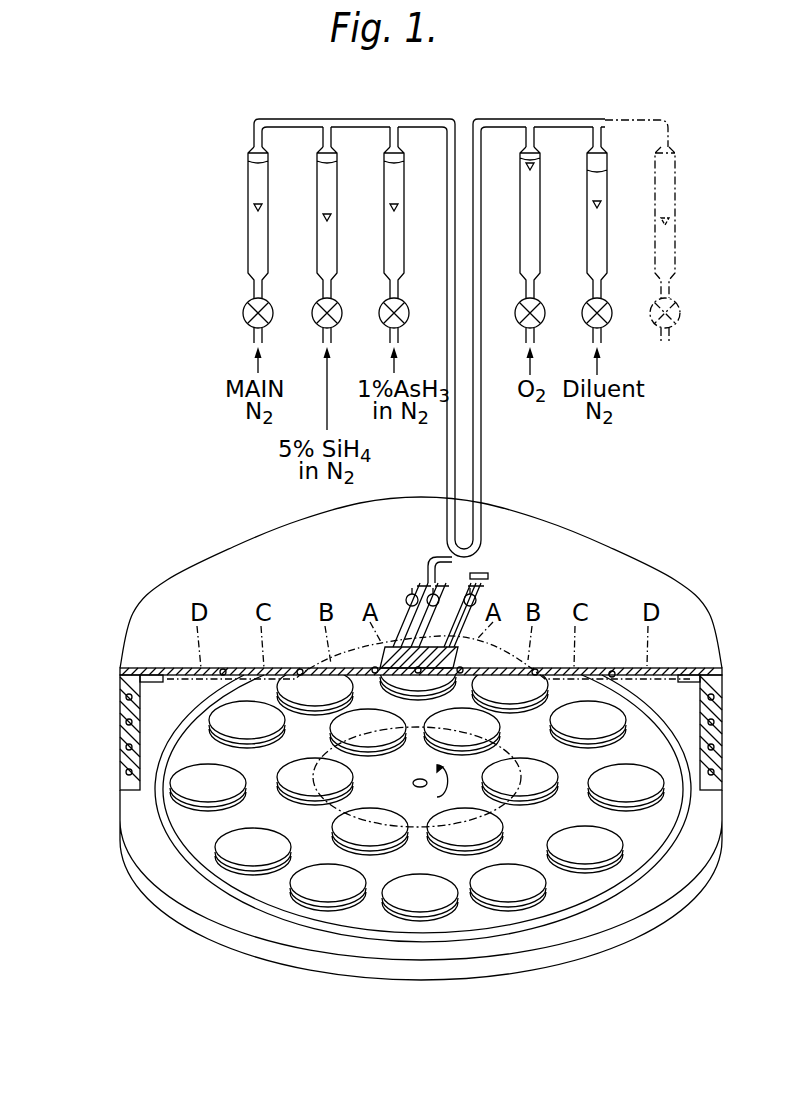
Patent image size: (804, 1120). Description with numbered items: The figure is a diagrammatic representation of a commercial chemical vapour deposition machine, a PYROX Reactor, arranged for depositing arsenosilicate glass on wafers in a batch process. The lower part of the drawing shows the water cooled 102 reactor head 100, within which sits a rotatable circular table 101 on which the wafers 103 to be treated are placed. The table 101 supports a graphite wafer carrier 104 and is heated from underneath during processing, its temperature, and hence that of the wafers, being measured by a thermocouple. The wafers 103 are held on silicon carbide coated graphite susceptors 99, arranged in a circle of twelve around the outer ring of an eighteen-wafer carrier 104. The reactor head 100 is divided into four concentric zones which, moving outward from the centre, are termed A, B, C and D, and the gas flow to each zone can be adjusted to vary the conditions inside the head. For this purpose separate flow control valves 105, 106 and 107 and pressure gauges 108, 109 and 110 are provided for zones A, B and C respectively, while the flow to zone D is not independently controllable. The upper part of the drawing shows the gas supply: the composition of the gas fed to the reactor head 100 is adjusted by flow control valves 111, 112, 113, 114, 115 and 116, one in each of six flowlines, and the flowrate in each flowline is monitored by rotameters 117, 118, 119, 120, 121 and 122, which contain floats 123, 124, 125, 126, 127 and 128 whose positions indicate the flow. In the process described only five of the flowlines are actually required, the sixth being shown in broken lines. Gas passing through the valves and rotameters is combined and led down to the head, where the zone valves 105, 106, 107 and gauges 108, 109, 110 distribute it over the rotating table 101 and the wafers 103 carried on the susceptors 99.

The silicon carbide coated graphite susceptor 99 is at (313, 893).
The reactor head 100 is at (198, 562).
The rotatable circular table 101 is at (222, 895).
The water cooling 102 is at (120, 738).
The wafer 103 is at (300, 903).
The graphite wafer carrier 104 is at (183, 827).
The flow control valve 105 is at (424, 584).
The flow control valve 106 is at (432, 560).
The flow control valve 107 is at (482, 596).
The pressure gauge 108 is at (407, 595).
The pressure gauge 109 is at (480, 578).
The pressure gauge 110 is at (477, 605).
The flow control valve 111 is at (245, 312).
The flow control valve 112 is at (313, 305).
The flow control valve 113 is at (380, 305).
The flow control valve 114 is at (537, 304).
The flow control valve 115 is at (605, 304).
The flow control valve 116 is at (680, 313).
The rotameter 117 is at (249, 233).
The rotameter 118 is at (318, 246).
The rotameter 119 is at (385, 246).
The rotameter 120 is at (521, 247).
The rotameter 121 is at (587, 247).
The rotameter 122 is at (676, 246).
The float 123 is at (260, 204).
The float 124 is at (329, 214).
The float 125 is at (396, 204).
The float 126 is at (528, 166).
The float 127 is at (594, 201).
The float 128 is at (668, 217).